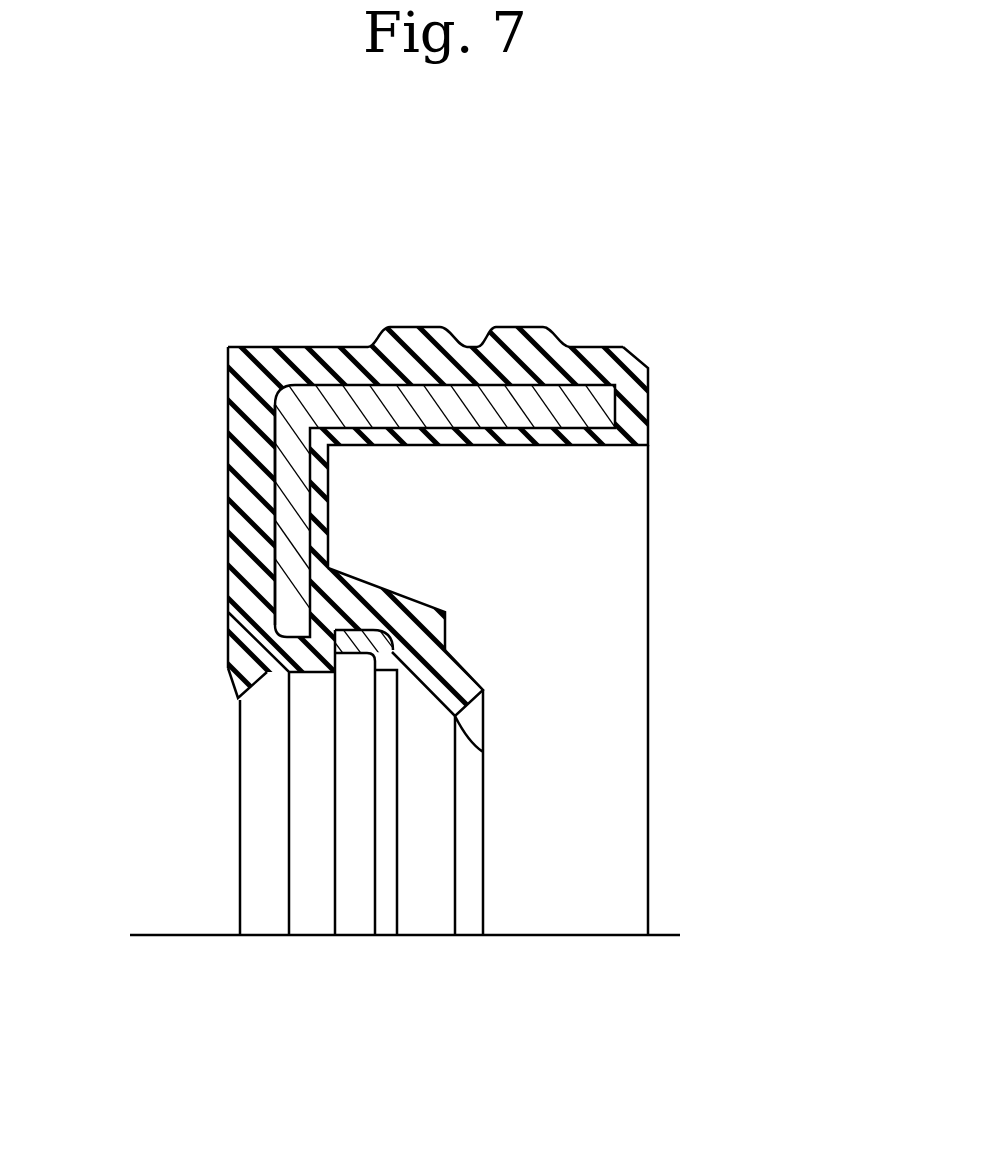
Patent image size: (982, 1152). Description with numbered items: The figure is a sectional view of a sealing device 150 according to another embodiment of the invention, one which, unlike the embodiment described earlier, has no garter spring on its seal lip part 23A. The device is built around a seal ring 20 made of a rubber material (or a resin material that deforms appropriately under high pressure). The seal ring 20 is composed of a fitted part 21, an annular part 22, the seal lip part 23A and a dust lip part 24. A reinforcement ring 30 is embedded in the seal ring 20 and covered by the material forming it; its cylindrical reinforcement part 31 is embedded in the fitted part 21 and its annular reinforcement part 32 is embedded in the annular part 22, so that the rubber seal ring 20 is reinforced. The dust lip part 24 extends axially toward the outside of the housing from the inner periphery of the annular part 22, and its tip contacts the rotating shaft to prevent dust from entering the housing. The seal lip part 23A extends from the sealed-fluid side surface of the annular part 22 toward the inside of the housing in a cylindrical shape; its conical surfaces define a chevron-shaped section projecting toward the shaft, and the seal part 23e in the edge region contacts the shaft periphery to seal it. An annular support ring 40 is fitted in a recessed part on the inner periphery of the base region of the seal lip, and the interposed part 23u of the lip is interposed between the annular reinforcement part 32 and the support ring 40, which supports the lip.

The seal ring 20 is at (594, 346).
The fitted part 21 is at (467, 343).
The annular part 22 is at (253, 537).
The seal lip part 23A is at (456, 653).
The seal part 23e is at (490, 735).
The interposed part 23u is at (353, 580).
The dust lip part 24 is at (236, 690).
The reinforcement ring 30 is at (337, 372).
The cylindrical reinforcement part 31 is at (388, 392).
The annular reinforcement part 32 is at (292, 490).
The support ring 40 is at (395, 620).
The sealing device 150 is at (659, 361).